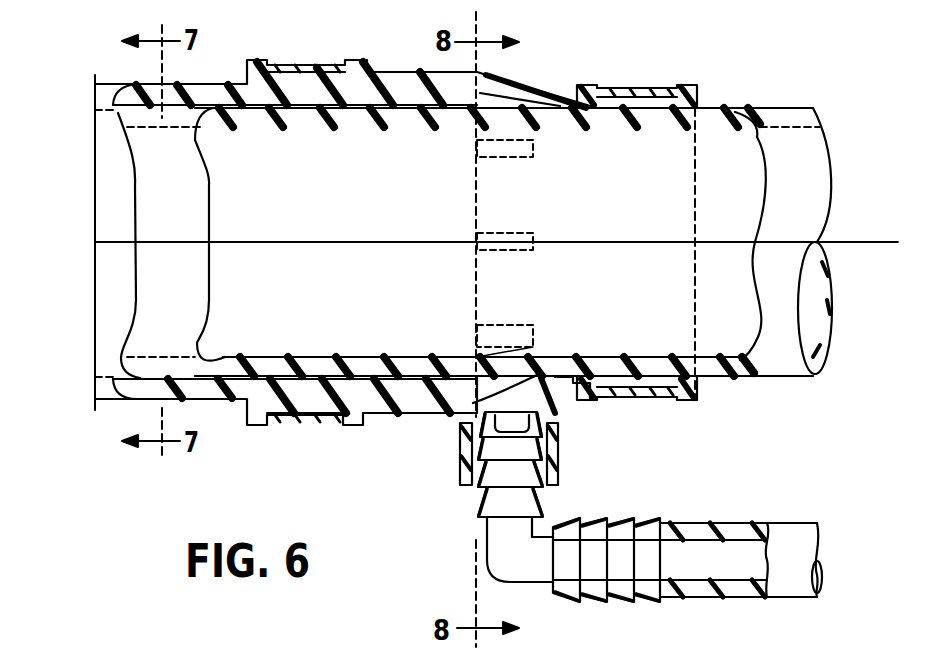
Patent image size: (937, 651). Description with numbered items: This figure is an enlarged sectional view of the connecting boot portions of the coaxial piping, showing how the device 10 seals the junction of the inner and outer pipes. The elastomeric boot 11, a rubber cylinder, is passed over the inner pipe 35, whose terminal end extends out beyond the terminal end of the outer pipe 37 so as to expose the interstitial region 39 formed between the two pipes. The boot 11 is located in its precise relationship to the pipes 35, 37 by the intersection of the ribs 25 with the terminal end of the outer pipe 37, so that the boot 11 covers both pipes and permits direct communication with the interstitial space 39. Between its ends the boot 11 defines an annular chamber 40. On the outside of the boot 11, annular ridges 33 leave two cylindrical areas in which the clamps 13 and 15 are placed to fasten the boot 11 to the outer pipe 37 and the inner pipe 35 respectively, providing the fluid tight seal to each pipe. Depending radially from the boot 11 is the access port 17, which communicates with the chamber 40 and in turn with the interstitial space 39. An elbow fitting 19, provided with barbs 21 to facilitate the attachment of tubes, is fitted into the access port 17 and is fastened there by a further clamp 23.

The device 10 is at (555, 100).
The boot 11 is at (414, 41).
The clamp 13 is at (312, 430).
The clamp 15 is at (648, 400).
The access port 17 is at (470, 497).
The elbow fitting 19 is at (488, 552).
The barbs 21 is at (585, 540).
The clamp 23 is at (460, 460).
The ribs 25 is at (507, 108).
The annular ridges 33 is at (252, 62).
The inner pipe 35 is at (724, 104).
The outer pipe 37 is at (103, 142).
The interstitial region 39 is at (365, 118).
The annular chamber 40 is at (493, 385).